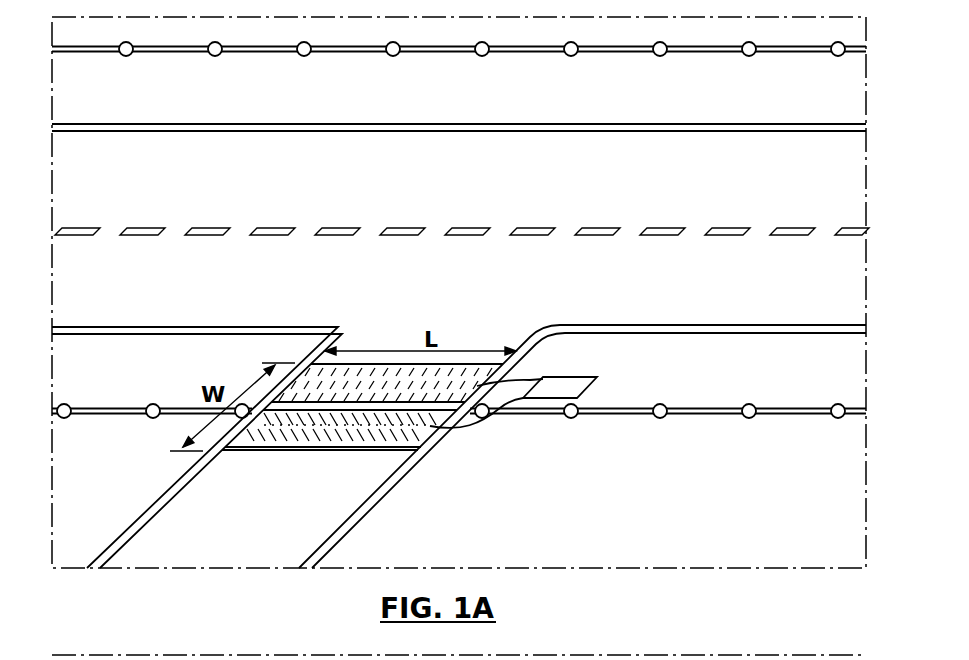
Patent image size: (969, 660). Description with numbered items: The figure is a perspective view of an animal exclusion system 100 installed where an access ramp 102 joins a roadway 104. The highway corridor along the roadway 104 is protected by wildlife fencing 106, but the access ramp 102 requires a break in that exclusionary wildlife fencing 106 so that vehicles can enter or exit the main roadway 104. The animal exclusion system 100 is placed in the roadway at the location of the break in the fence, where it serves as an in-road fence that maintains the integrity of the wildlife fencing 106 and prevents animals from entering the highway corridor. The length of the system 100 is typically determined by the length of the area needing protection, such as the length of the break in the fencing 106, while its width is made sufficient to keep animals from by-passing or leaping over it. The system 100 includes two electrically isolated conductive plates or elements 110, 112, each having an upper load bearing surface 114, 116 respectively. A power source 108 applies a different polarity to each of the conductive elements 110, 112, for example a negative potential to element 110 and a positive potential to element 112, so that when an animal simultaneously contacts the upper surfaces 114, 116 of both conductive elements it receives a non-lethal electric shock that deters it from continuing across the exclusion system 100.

The animal exclusion system 100 is at (455, 447).
The access ramp 102 is at (260, 547).
The roadway 104 is at (470, 198).
The wildlife fencing 106 is at (701, 52).
The power source 108 is at (568, 377).
The conductive element 110 is at (388, 431).
The conductive element 112 is at (318, 387).
The upper load bearing surface 114 is at (284, 430).
The upper load bearing surface 116 is at (447, 382).